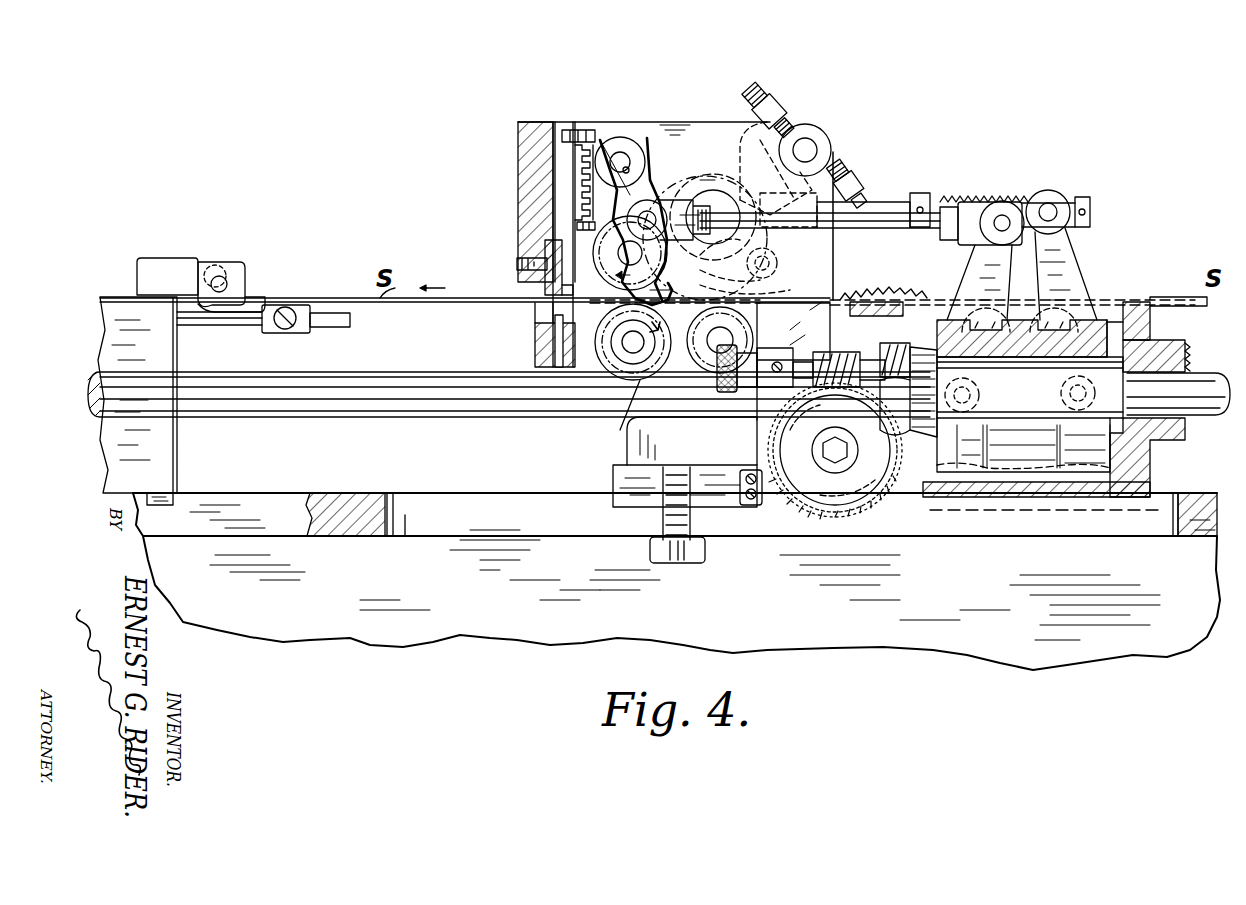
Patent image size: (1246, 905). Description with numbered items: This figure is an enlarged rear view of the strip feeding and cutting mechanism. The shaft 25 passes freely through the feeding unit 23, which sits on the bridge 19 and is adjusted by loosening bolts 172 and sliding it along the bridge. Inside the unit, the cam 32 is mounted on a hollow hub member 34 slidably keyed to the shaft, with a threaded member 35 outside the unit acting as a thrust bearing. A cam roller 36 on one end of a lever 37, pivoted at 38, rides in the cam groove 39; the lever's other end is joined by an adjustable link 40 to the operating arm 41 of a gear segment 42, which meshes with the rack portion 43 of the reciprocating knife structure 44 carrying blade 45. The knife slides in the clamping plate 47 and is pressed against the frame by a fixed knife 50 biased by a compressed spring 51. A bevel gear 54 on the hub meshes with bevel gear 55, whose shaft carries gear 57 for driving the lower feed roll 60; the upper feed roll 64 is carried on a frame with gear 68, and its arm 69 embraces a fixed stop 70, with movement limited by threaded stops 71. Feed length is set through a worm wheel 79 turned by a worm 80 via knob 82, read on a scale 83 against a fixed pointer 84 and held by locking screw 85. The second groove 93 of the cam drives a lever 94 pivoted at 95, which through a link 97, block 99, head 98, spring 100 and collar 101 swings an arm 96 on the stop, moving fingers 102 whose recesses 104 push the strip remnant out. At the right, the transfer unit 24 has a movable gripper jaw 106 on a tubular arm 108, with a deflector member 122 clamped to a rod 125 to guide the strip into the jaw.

The bridge 19 is at (432, 645).
The feeding unit 23 is at (613, 457).
The transfer unit 24 is at (120, 318).
The shaft 25 is at (290, 375).
The cam 32 is at (1135, 315).
The hollow hub member 34 is at (1165, 350).
The thrust bearing member 35 is at (1180, 435).
The cam roller 36 is at (1000, 400).
The lever 37 is at (975, 282).
The pivot 38 is at (980, 325).
The cam groove 39 is at (975, 468).
The adjustable link 40 is at (880, 228).
The operating arm 41 is at (658, 198).
The gear segment 42 is at (600, 140).
The rack portion 43 is at (565, 130).
The reciprocating knife structure 44 is at (552, 205).
The blade 45 is at (537, 315).
The clamping plate 47 is at (522, 158).
The fixed knife 50 is at (545, 282).
The compressed spring 51 is at (517, 263).
The bevel gear 54 is at (912, 352).
The bevel gear 55 is at (888, 345).
The gear 57 is at (870, 293).
The lower feed roll 60 is at (633, 380).
The upper feed roll 64 is at (600, 225).
The gear 68 is at (712, 185).
The arm 69 is at (790, 120).
The fixed stop 70 is at (812, 148).
The movable threaded stops 71 is at (768, 90).
The worm wheel 79 is at (840, 505).
The worm 80 is at (838, 356).
The manually adjustable knob 82 is at (722, 392).
The scale 83 is at (860, 506).
The fixed pointer 84 is at (765, 503).
The locking screw 85 is at (785, 365).
The second cam groove 93 is at (1092, 502).
The lever 94 is at (1090, 251).
The pivot 95 is at (1075, 307).
The arm 96 is at (780, 264).
The link 97 is at (930, 200).
The collar or head 98 is at (1090, 197).
The block 99 is at (1053, 192).
The spring 100 is at (990, 200).
The collar 101 is at (930, 196).
The fingers 102 is at (790, 290).
The recesses 104 is at (605, 390).
The movable gripper jaw 106 is at (258, 312).
The tubular arm 108 is at (177, 260).
The deflector member 122 is at (296, 328).
The rod 125 is at (346, 328).
The bolts 172 is at (706, 556).